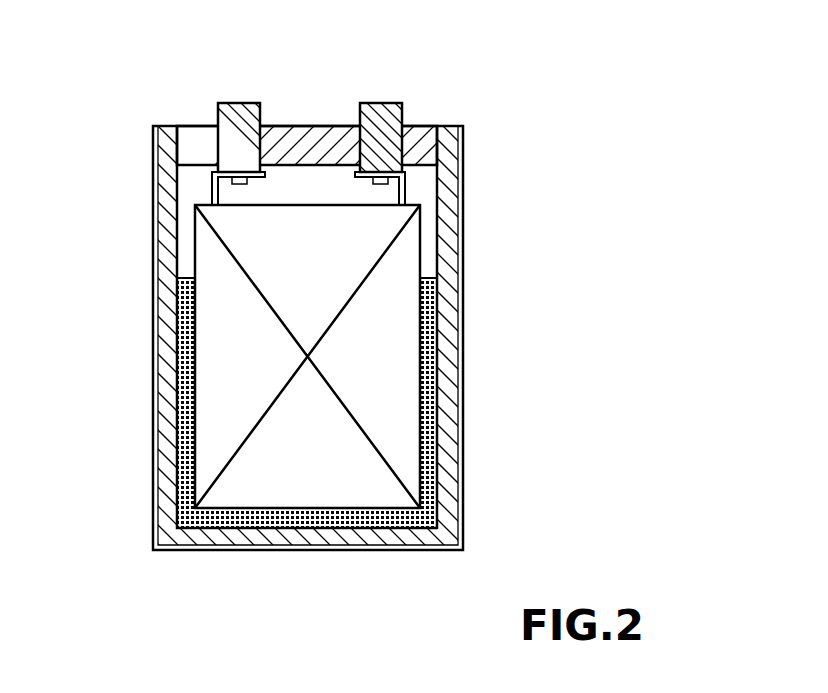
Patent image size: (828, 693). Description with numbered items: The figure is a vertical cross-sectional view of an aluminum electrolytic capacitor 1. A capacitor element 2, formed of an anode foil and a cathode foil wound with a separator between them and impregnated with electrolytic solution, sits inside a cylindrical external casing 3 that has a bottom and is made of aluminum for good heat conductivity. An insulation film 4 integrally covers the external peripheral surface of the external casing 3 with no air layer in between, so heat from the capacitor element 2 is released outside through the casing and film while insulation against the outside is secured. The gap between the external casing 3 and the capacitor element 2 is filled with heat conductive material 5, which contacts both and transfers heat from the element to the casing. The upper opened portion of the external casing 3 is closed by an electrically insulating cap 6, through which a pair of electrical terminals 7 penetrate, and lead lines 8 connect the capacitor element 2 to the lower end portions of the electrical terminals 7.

The electrolytic capacitor 1 is at (503, 100).
The capacitor element 2 is at (343, 463).
The external casing 3 is at (447, 457).
The insulation film 4 is at (462, 280).
The heat conductive material 5 is at (437, 358).
The cap 6 is at (318, 135).
The electrical terminals 7 is at (230, 112).
The lead lines 8 is at (212, 188).